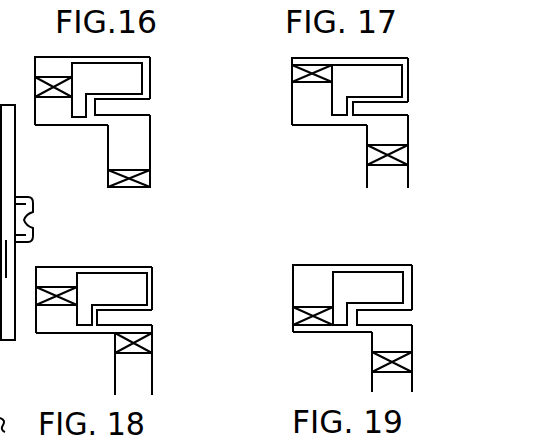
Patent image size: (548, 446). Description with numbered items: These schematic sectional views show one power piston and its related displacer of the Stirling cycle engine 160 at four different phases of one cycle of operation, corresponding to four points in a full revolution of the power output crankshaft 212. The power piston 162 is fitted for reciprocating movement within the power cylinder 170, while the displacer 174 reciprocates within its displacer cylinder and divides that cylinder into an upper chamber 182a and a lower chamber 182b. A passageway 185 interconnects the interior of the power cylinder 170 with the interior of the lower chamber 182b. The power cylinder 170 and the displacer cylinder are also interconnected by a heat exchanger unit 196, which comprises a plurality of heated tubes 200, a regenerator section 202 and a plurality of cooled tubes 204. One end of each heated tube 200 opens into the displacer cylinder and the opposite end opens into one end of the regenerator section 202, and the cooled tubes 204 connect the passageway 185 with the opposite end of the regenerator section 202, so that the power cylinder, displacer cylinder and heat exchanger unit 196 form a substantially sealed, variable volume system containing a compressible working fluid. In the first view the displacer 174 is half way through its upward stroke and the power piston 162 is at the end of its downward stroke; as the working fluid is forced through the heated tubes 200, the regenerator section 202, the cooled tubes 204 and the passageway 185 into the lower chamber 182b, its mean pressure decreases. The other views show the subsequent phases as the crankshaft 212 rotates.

In FIG. 16, the Stirling cycle engine 160 is at (114, 107).
In FIG. 17, the Stirling cycle engine 160 is at (359, 115).
In FIG. 18, the Stirling cycle engine 160 is at (133, 316).
In FIG. 19, the Stirling cycle engine 160 is at (362, 306).
In FIG. 16, the power piston 162 is at (150, 175).
In FIG. 17, the power piston 162 is at (408, 157).
In FIG. 18, the power piston 162 is at (155, 340).
In FIG. 19, the power piston 162 is at (410, 362).
In FIG. 16, the power cylinder 170 is at (147, 145).
In FIG. 17, the power cylinder 170 is at (408, 130).
In FIG. 18, the power cylinder 170 is at (140, 370).
In FIG. 19, the power cylinder 170 is at (410, 335).
In FIG. 16, the displacer 174 is at (35, 87).
In FIG. 17, the displacer 174 is at (295, 72).
In FIG. 18, the displacer 174 is at (80, 295).
In FIG. 19, the displacer 174 is at (295, 320).
In FIG. 16, the upper chamber 182a is at (55, 62).
In FIG. 18, the upper chamber 182a is at (60, 270).
In FIG. 19, the upper chamber 182a is at (300, 283).
In FIG. 16, the lower chamber 182b is at (53, 120).
In FIG. 17, the lower chamber 182b is at (307, 117).
In FIG. 18, the lower chamber 182b is at (57, 335).
In FIG. 16, the passageway 185 is at (87, 123).
In FIG. 17, the passageway 185 is at (340, 118).
In FIG. 18, the passageway 185 is at (90, 333).
In FIG. 19, the passageway 185 is at (345, 330).
In FIG. 16, the heat exchanger unit 196 is at (153, 104).
In FIG. 17, the heat exchanger unit 196 is at (411, 103).
In FIG. 18, the heat exchanger unit 196 is at (154, 267).
In FIG. 19, the heat exchanger unit 196 is at (414, 266).
In FIG. 16, the heated tubes 200 is at (130, 58).
In FIG. 17, the heated tubes 200 is at (390, 60).
In FIG. 18, the heated tubes 200 is at (115, 267).
In FIG. 19, the heated tubes 200 is at (357, 265).
In FIG. 16, the regenerator section 202 is at (147, 65).
In FIG. 17, the regenerator section 202 is at (408, 72).
In FIG. 18, the regenerator section 202 is at (155, 283).
In FIG. 19, the regenerator section 202 is at (408, 283).
In FIG. 16, the cooled tubes 204 is at (130, 96).
In FIG. 17, the cooled tubes 204 is at (390, 98).
In FIG. 18, the cooled tubes 204 is at (135, 309).
In FIG. 19, the cooled tubes 204 is at (392, 310).
In FIG. 16, the power output crankshaft 212 is at (40, 200).